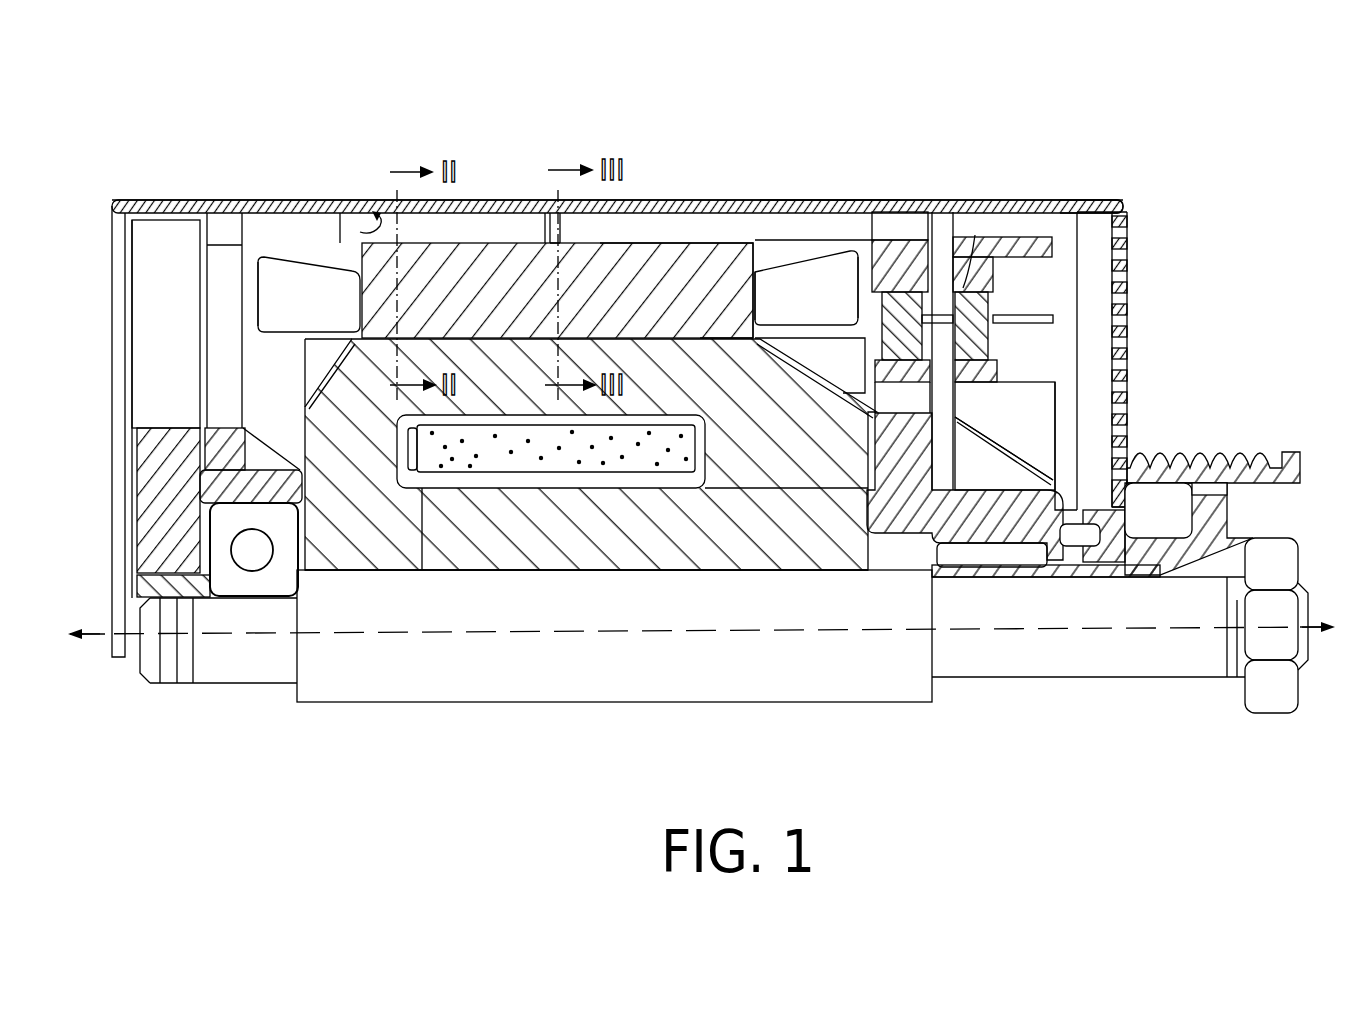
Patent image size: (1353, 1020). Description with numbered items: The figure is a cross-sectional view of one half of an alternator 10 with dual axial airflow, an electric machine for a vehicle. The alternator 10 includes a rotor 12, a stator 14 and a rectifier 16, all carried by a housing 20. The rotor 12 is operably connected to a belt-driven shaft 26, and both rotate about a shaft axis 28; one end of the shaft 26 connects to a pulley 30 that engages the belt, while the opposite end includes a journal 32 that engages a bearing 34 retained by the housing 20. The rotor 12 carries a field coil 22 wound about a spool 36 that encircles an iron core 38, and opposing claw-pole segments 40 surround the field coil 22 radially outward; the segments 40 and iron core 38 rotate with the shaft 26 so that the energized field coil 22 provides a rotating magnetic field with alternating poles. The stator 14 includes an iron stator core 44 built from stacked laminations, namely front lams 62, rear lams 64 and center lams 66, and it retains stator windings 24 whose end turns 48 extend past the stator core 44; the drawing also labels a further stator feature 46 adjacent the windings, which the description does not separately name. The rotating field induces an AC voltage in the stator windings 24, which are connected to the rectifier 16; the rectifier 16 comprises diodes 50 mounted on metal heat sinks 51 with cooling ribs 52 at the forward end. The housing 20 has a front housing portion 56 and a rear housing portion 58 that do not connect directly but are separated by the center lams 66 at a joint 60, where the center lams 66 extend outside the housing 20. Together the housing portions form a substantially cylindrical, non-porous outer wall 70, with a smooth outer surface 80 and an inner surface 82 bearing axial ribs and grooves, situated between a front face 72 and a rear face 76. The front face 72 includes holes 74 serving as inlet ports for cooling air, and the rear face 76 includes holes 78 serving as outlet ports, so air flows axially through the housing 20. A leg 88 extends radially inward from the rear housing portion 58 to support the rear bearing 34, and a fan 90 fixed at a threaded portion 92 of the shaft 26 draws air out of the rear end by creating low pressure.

The alternator 10 is at (1180, 140).
The rotor 12 is at (707, 363).
The stator 14 is at (653, 275).
The rectifier 16 is at (910, 292).
The housing 20 is at (830, 200).
The field coil 22 is at (670, 425).
The stator windings 24 is at (787, 260).
The shaft 26 is at (870, 668).
The shaft axis 28 is at (1150, 628).
The pulley 30 is at (1237, 458).
The journal 32 is at (232, 665).
The bearing 34 is at (230, 562).
The spool 36 is at (770, 468).
The iron core 38 is at (623, 547).
The claw-pole segments 40 is at (512, 398).
The stator core 44 is at (478, 275).
The second coil flange 46 is at (838, 262).
The end turns 48 is at (287, 210).
The diodes 50 is at (908, 337).
The metal heat sinks 51 is at (977, 377).
The cooling ribs 52 is at (1020, 243).
The front housing portion 56 is at (1057, 197).
The rear housing portion 58 is at (222, 205).
The joint 60 is at (550, 208).
The front lams 62 is at (755, 265).
The rear lams 64 is at (325, 205).
The center lams 66 is at (545, 222).
The outer wall 70 is at (342, 203).
The front face 72 is at (1125, 215).
The holes 74 is at (1118, 250).
The rear face 76 is at (110, 233).
The holes 78 is at (120, 342).
The outer surface 80 is at (684, 188).
The inner surface 82 is at (362, 203).
The leg 88 is at (223, 397).
The fan 90 is at (145, 242).
The threaded portion 92 is at (183, 667).